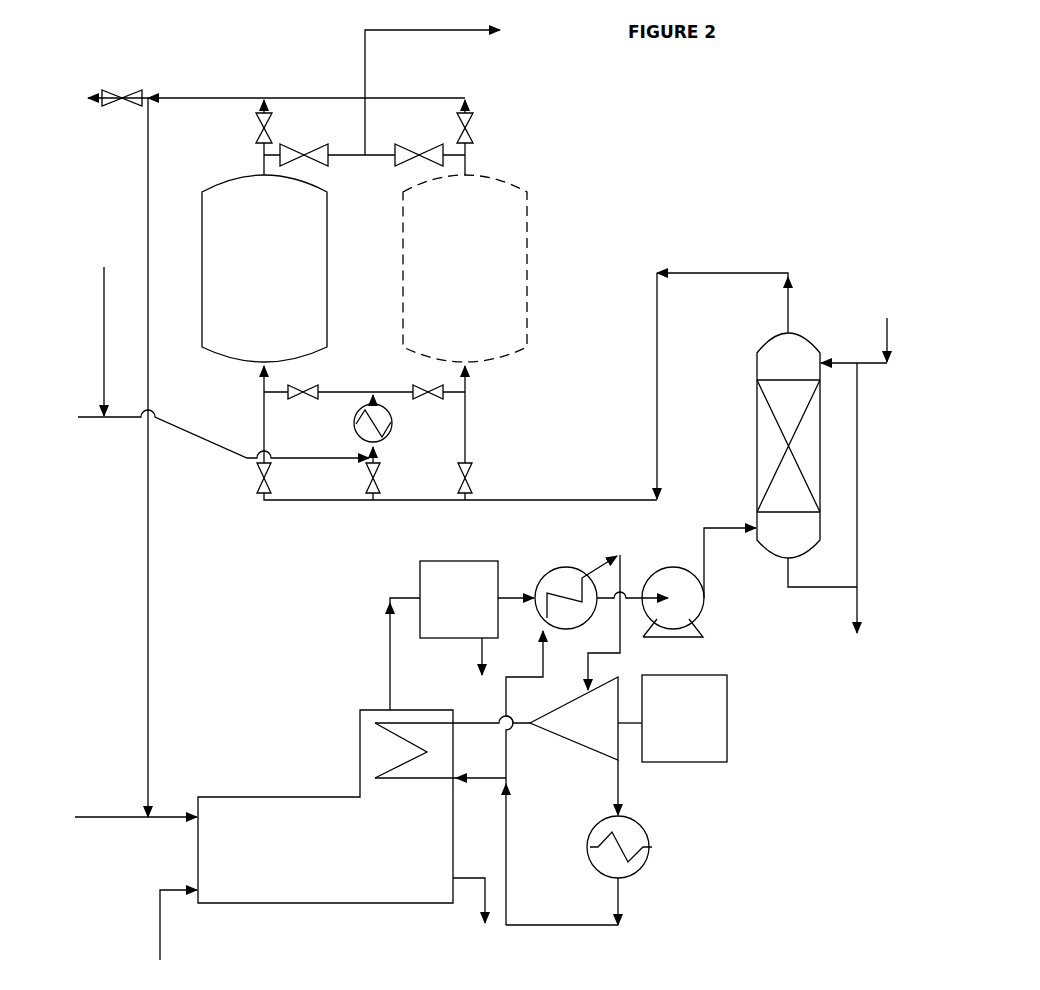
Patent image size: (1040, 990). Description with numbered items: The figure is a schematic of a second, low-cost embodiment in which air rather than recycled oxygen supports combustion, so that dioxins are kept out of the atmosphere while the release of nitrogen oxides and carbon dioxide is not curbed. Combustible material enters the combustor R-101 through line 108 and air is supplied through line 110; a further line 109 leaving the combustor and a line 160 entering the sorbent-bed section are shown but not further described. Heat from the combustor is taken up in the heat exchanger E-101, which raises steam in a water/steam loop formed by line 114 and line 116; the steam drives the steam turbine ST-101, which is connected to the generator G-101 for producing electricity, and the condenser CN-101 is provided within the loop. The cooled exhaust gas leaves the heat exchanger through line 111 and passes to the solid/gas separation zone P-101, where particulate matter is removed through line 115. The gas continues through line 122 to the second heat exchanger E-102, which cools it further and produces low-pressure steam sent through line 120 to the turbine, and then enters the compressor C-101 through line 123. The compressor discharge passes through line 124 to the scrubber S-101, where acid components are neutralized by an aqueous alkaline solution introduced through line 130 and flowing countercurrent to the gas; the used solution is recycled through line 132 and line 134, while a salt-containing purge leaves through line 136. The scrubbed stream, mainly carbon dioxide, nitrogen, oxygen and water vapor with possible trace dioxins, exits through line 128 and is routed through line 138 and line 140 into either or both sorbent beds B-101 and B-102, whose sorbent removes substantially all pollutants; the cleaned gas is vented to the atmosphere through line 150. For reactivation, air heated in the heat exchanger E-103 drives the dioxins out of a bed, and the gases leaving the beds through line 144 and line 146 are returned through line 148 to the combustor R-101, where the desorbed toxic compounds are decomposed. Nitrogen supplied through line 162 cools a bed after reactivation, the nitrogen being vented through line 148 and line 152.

The combustible material feed line 108 is at (168, 897).
The reactor product stream 109 is at (478, 883).
The air line 110 is at (107, 828).
The exhaust gas line 111 is at (380, 640).
The water line of water/steam loop 114 is at (535, 918).
The particulate removal line 115 is at (478, 651).
The steam line of water/steam loop 116 is at (483, 718).
The low-pressure steam line 120 is at (583, 663).
The exhaust gas line to second heat exchanger 122 is at (518, 592).
The compressor inlet line 123 is at (635, 590).
The compressor discharge line 124 is at (703, 522).
The scrubbed effluent line 128 is at (773, 268).
The alkaline solution inlet line 130 is at (862, 353).
The alkaline solution recycle line 132 is at (823, 593).
The alkaline solution recycle line 134 is at (882, 452).
The alkaline solution purge line 136 is at (863, 578).
The sorbent bed feed line 138 is at (472, 440).
The sorbent bed feed line 140 is at (260, 405).
The bed outlet line 144 is at (470, 127).
The bed outlet line 146 is at (258, 128).
The reactivation gas return line 148 is at (208, 95).
The atmospheric discharge line 150 is at (423, 35).
The nitrogen vent line 152 is at (120, 92).
The inlet line to adsorber section 160 is at (212, 450).
The nitrogen supply line 162 is at (97, 322).
The sorbent bed B-101 is at (264, 268).
The sorbent bed B-102 is at (465, 268).
The heat exchanger E-101 is at (353, 743).
The second heat exchanger E-102 is at (557, 562).
The reactivation heat exchanger E-103 is at (398, 420).
The solid/gas separation zone P-101 is at (459, 599).
The recycle compressor C-101 is at (708, 593).
The scrubber S-101 is at (755, 448).
The combustor R-101 is at (325, 806).
The steam turbine ST-101 is at (586, 718).
The generator G-101 is at (684, 718).
The condenser CN-101 is at (657, 843).